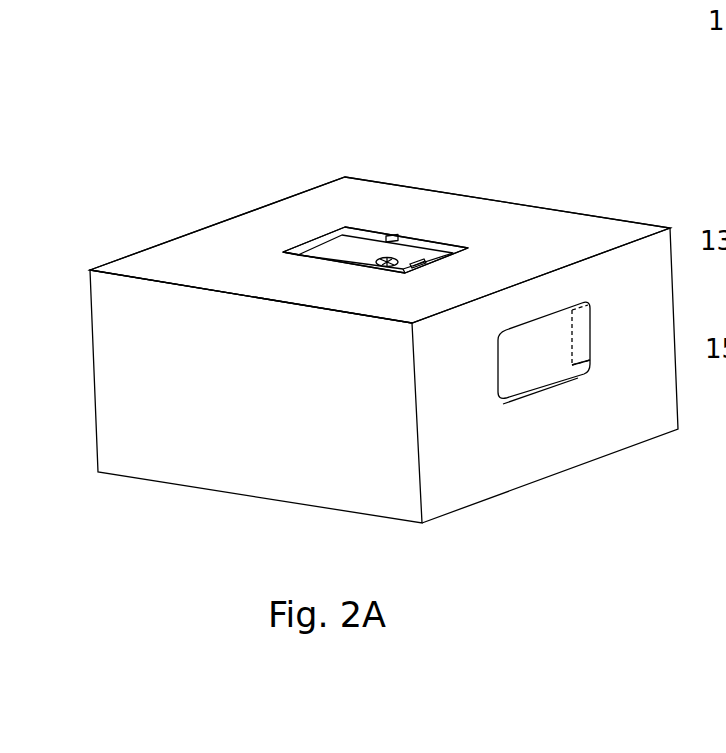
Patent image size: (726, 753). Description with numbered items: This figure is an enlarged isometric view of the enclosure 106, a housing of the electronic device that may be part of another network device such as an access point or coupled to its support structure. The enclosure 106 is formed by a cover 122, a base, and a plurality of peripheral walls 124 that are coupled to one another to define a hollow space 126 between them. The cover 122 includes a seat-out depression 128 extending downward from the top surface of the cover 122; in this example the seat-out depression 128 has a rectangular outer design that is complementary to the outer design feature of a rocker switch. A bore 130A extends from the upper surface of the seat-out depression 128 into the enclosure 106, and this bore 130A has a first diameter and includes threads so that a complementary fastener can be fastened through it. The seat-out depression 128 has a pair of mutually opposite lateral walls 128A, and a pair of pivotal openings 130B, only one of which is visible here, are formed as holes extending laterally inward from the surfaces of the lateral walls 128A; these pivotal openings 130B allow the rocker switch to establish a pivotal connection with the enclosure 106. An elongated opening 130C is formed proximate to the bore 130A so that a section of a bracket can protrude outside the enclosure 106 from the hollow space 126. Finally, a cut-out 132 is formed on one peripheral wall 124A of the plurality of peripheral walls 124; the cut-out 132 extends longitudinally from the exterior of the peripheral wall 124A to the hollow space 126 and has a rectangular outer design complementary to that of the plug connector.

The enclosure 106 is at (207, 105).
The cover 122 is at (535, 232).
The peripheral walls 124 is at (218, 460).
The peripheral wall 124A is at (538, 462).
The hollow space 126 is at (555, 338).
The seat-out depression 128 is at (340, 253).
The lateral walls 128A is at (362, 232).
The bore 130A is at (390, 253).
The pivotal openings 130B is at (393, 237).
The elongated opening 130C is at (413, 272).
The cut-out 132 is at (580, 373).